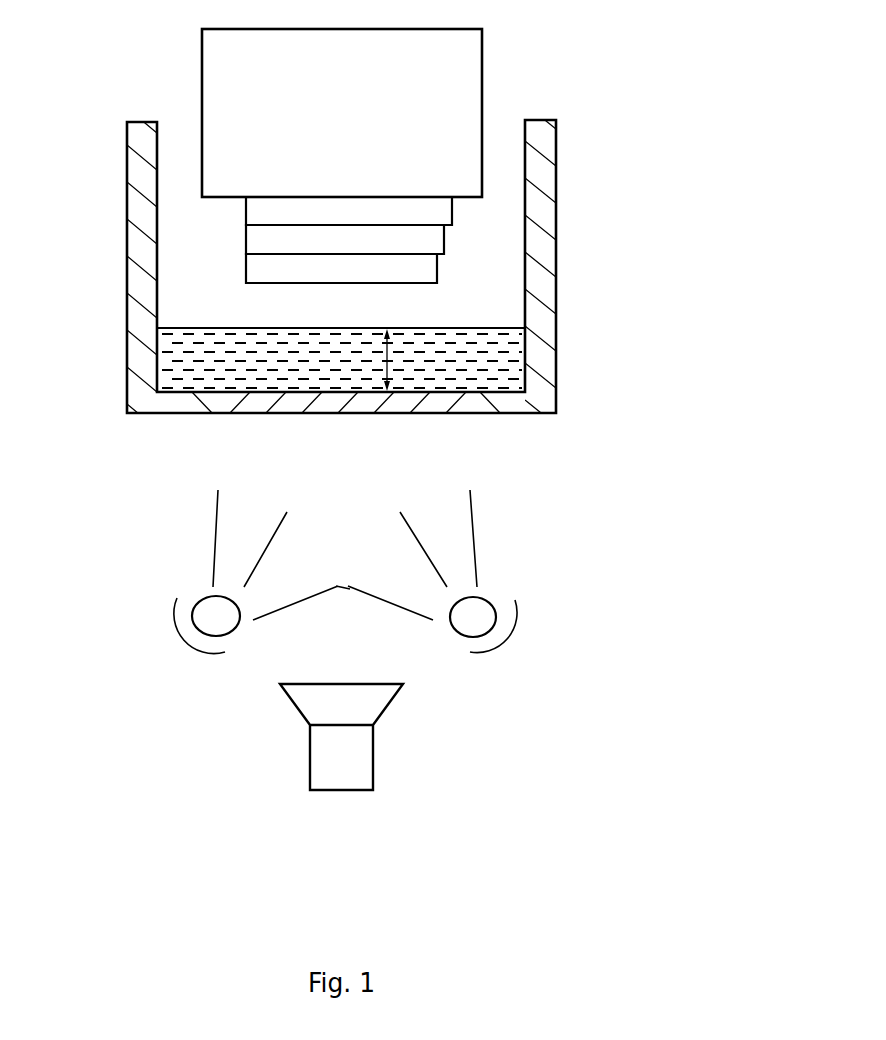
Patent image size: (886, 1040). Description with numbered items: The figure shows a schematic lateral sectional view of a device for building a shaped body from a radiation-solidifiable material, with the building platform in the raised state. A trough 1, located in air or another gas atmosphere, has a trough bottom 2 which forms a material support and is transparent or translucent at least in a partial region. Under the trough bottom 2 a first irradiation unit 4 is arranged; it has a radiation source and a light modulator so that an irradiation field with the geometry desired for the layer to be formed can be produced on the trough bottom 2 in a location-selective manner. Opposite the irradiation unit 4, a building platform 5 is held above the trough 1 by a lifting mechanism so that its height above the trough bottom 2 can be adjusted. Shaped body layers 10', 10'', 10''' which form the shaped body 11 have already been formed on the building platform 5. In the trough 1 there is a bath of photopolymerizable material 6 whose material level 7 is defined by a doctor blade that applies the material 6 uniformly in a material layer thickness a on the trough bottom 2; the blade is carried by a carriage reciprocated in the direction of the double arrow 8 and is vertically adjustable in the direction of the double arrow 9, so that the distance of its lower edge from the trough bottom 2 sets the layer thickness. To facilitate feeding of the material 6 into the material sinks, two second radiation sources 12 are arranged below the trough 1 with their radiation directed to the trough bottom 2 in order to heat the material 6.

The trough 1 is at (540, 247).
The trough bottom 2 is at (503, 388).
The first irradiation unit 4 is at (358, 762).
The building platform 5 is at (482, 57).
The photopolymerizable material 6 is at (187, 358).
The material level 7 is at (183, 327).
The double arrow 8 is at (61, 199).
The double arrow 9 is at (91, 121).
The shaped body layer 10' is at (375, 211).
The shaped body layer 10'' is at (378, 240).
The shaped body layer 10''' is at (382, 274).
The shaped body 11 is at (228, 236).
The second radiation source 12 is at (203, 620).
The material layer thickness a is at (378, 360).